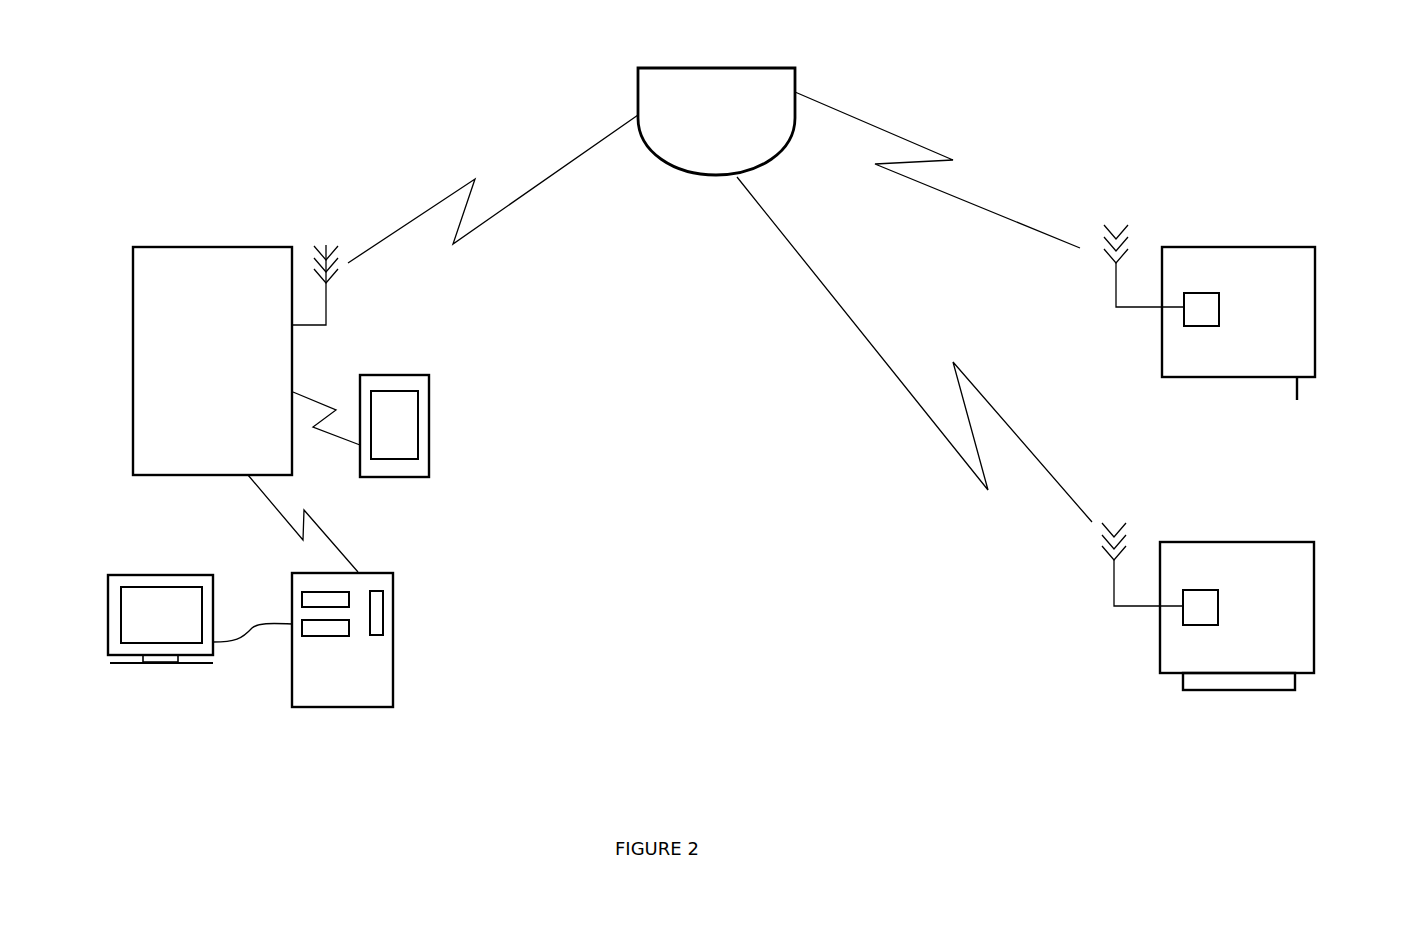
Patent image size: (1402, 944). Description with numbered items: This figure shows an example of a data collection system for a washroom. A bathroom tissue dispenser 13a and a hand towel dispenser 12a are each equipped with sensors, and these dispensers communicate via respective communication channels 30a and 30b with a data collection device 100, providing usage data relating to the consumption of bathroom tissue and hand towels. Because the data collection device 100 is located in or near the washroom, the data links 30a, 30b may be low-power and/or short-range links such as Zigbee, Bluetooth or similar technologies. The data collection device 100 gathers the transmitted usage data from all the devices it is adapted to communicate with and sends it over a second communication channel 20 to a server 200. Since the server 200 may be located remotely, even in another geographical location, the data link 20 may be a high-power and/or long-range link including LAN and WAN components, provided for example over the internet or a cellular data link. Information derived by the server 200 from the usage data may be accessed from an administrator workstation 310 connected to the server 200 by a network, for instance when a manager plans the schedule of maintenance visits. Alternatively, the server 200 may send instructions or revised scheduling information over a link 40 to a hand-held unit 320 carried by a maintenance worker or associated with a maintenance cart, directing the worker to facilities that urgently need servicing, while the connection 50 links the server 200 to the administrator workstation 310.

The data collection device 100 is at (717, 80).
The second communication channel 20 is at (493, 189).
The communication channel 30a is at (914, 349).
The communication channel 30b is at (937, 170).
The server 200 is at (166, 262).
The communication link to mobile device 40 is at (326, 410).
The hand-held unit 320 is at (404, 467).
The communication link to computer 50 is at (303, 523).
The administrator workstation 310 is at (340, 697).
The bathroom tissue dispenser 13a is at (1303, 319).
The hand towel dispenser 12a is at (1305, 627).